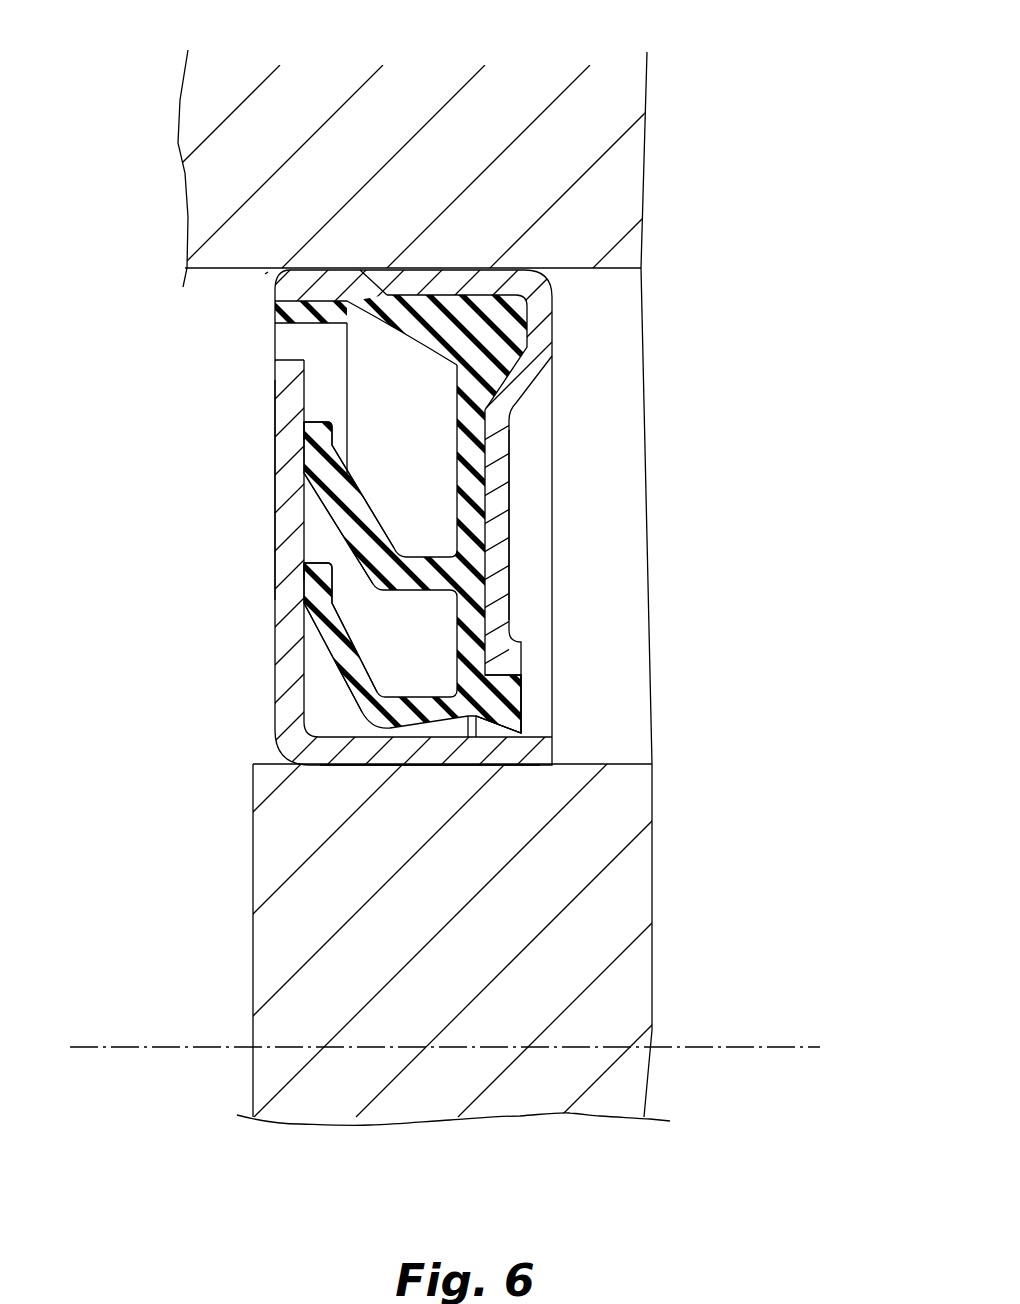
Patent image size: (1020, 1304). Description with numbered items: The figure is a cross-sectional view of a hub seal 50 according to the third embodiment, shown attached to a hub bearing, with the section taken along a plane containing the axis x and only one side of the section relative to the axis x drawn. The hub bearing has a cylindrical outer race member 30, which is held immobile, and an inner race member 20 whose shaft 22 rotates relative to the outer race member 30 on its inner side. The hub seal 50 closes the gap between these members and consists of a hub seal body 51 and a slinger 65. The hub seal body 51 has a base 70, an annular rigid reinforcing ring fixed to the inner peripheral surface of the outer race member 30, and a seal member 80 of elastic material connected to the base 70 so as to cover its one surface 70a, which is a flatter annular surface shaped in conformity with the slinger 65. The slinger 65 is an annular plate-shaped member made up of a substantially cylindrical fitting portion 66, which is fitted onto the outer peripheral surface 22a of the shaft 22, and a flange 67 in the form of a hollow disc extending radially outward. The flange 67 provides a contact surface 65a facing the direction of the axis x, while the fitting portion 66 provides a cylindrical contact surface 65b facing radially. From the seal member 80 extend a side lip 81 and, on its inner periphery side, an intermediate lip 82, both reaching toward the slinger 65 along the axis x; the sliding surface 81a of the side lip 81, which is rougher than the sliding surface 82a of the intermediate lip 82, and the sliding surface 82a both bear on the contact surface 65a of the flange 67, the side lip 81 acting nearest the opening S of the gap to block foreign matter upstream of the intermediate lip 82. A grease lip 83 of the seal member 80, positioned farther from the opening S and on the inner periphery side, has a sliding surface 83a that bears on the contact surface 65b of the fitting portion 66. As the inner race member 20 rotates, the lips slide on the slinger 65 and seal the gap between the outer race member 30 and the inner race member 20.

The inner race member 20 is at (456, 955).
The shaft 22 is at (250, 862).
The outer peripheral surface 22a is at (590, 762).
The outer race member 30 is at (610, 39).
The hub seal 50 is at (510, 712).
The hub seal body 51 is at (589, 333).
The slinger 65 is at (510, 573).
The contact surface 65a is at (318, 658).
The contact surface 65b is at (330, 764).
The fitting portion 66 is at (385, 771).
The flange 67 is at (268, 483).
The base 70 is at (606, 537).
The one surface 70a is at (514, 427).
The seal member 80 is at (510, 519).
The side lip 81 is at (287, 489).
The sliding surface 81a is at (300, 440).
The intermediate lip 82 is at (291, 622).
The sliding surface 82a is at (300, 578).
The grease lip 83 is at (601, 735).
The sliding surface 83a is at (495, 767).
The opening S is at (265, 274).
The axis x is at (737, 1052).